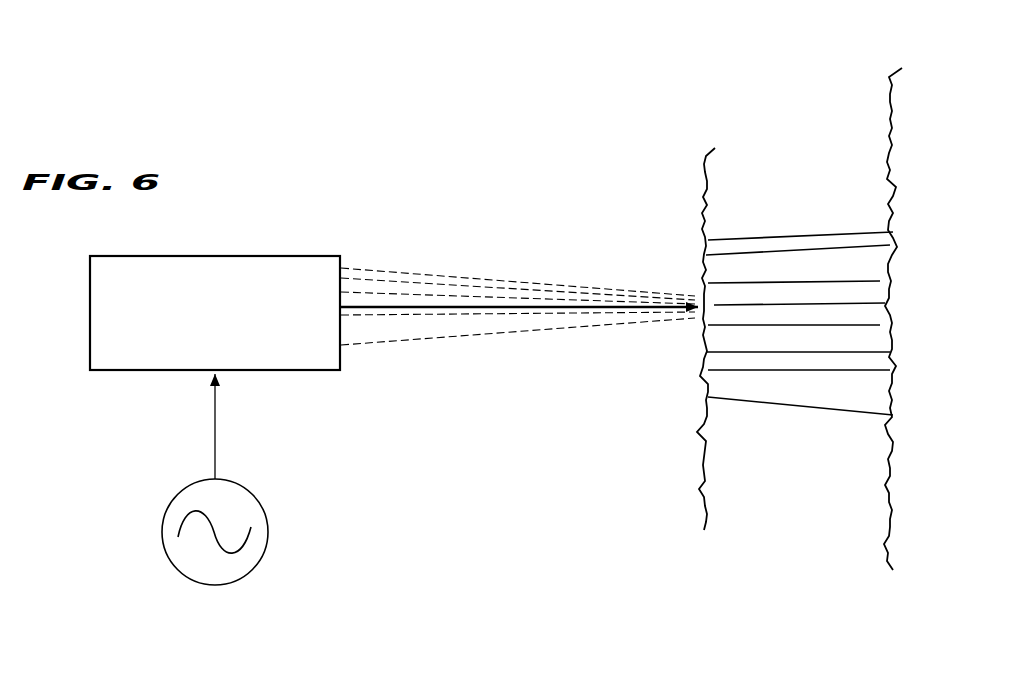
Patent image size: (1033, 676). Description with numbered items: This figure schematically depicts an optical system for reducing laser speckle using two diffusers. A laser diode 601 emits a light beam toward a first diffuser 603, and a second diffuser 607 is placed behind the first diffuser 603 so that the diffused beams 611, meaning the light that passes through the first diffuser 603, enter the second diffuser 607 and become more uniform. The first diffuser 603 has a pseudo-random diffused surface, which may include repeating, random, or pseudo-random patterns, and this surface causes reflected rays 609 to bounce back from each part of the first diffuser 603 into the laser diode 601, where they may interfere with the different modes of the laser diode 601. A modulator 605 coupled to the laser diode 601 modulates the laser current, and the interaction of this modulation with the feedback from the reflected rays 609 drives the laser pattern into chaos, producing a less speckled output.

The laser diode 601 is at (233, 355).
The first diffuser 603 is at (681, 166).
The modulator 605 is at (162, 531).
The second diffuser 607 is at (860, 92).
The reflected rays 609 is at (448, 315).
The diffused beams 611 is at (804, 412).